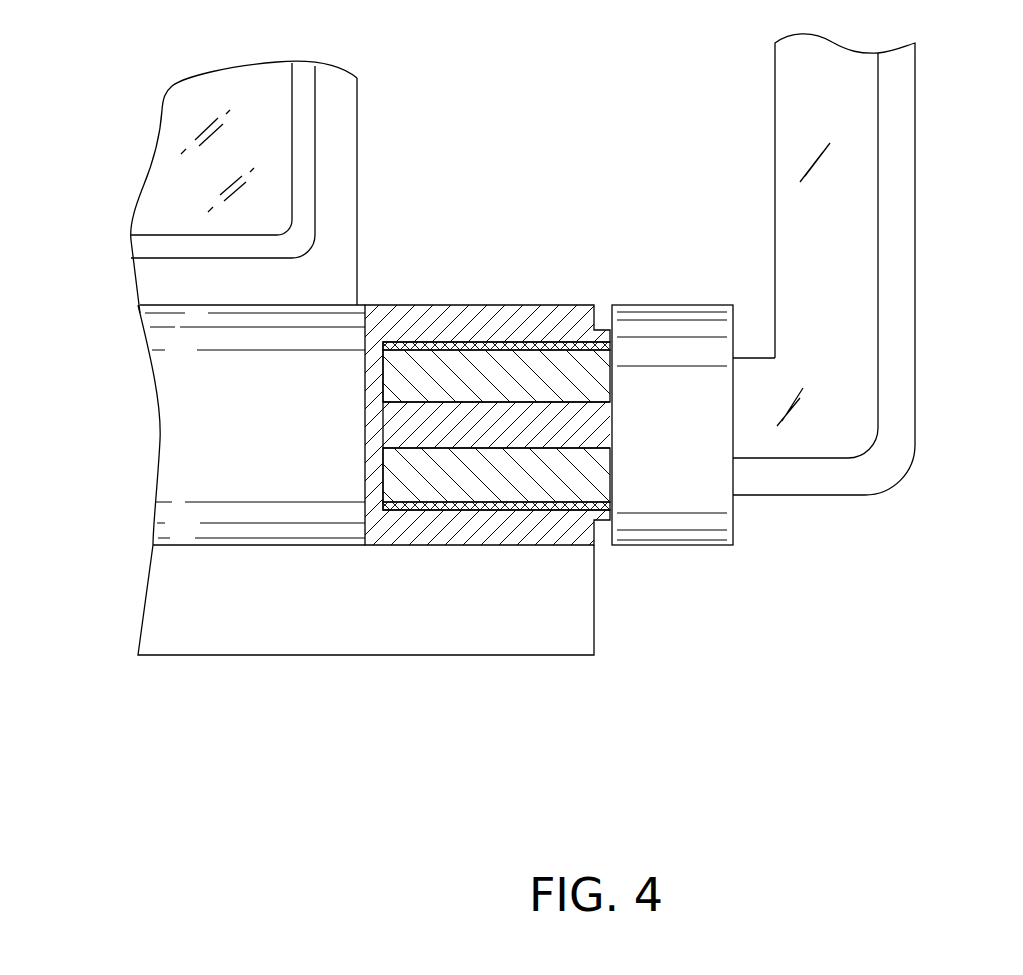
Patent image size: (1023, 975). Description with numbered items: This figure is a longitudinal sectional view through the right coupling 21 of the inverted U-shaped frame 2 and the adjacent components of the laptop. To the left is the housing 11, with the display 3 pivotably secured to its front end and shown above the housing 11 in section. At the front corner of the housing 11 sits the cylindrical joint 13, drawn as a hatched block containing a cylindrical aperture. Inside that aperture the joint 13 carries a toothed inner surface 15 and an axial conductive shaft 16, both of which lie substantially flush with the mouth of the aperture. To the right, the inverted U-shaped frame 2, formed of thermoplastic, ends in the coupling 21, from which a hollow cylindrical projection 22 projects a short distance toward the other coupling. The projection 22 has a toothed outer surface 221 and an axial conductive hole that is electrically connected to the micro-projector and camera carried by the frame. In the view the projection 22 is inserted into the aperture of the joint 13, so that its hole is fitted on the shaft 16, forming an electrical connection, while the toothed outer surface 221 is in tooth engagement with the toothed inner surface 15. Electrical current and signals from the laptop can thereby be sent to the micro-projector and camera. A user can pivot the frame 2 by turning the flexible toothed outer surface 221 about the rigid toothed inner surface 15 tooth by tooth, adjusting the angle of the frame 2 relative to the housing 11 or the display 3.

The inverted U-shaped frame 2 is at (842, 232).
The coupling 21 is at (798, 442).
The display 3 is at (243, 98).
The housing 11 is at (248, 605).
The cylindrical joint 13 is at (412, 312).
The toothed inner surface 15 is at (508, 342).
The axial conductive shaft 16 is at (515, 422).
The hollow cylindrical projection 22 is at (580, 378).
The toothed outer surface 221 is at (542, 498).